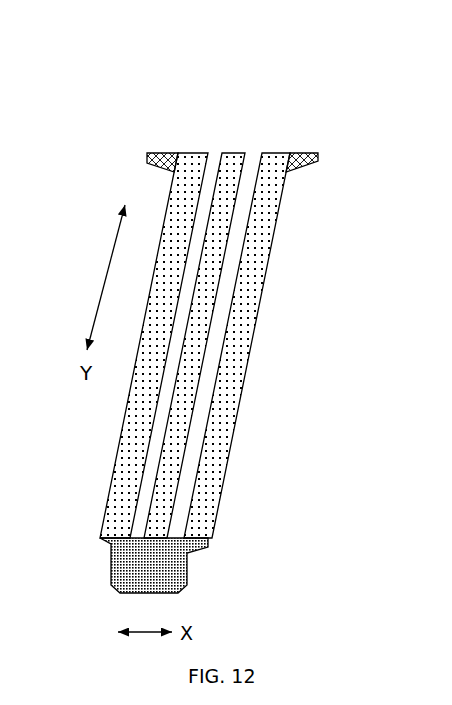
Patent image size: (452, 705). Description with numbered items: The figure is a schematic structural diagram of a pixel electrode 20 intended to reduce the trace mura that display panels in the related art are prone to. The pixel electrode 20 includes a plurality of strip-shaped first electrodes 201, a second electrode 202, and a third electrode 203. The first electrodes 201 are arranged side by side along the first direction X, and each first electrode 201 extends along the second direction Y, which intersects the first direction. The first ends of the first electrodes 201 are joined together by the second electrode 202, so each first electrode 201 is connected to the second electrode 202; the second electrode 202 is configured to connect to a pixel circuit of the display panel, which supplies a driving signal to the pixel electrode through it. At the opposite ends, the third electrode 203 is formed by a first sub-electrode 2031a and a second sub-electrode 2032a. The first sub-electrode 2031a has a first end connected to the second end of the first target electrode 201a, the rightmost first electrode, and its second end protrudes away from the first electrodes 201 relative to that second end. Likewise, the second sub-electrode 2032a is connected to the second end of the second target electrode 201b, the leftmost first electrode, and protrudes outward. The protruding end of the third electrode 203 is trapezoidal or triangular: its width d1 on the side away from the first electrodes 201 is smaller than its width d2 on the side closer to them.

The pixel electrode 20 is at (118, 43).
The first electrodes 201 is at (191, 345).
The first target electrode 201a is at (248, 362).
The second target electrode 201b is at (123, 424).
The second electrode 202 is at (190, 572).
The third electrode 203 is at (242, 99).
The first sub-electrode 2031a is at (316, 125).
The second sub-electrode 2032a is at (163, 153).
The width of the side away from the first electrodes d1 is at (138, 187).
The width of the side closer to the first electrodes d2 is at (174, 172).